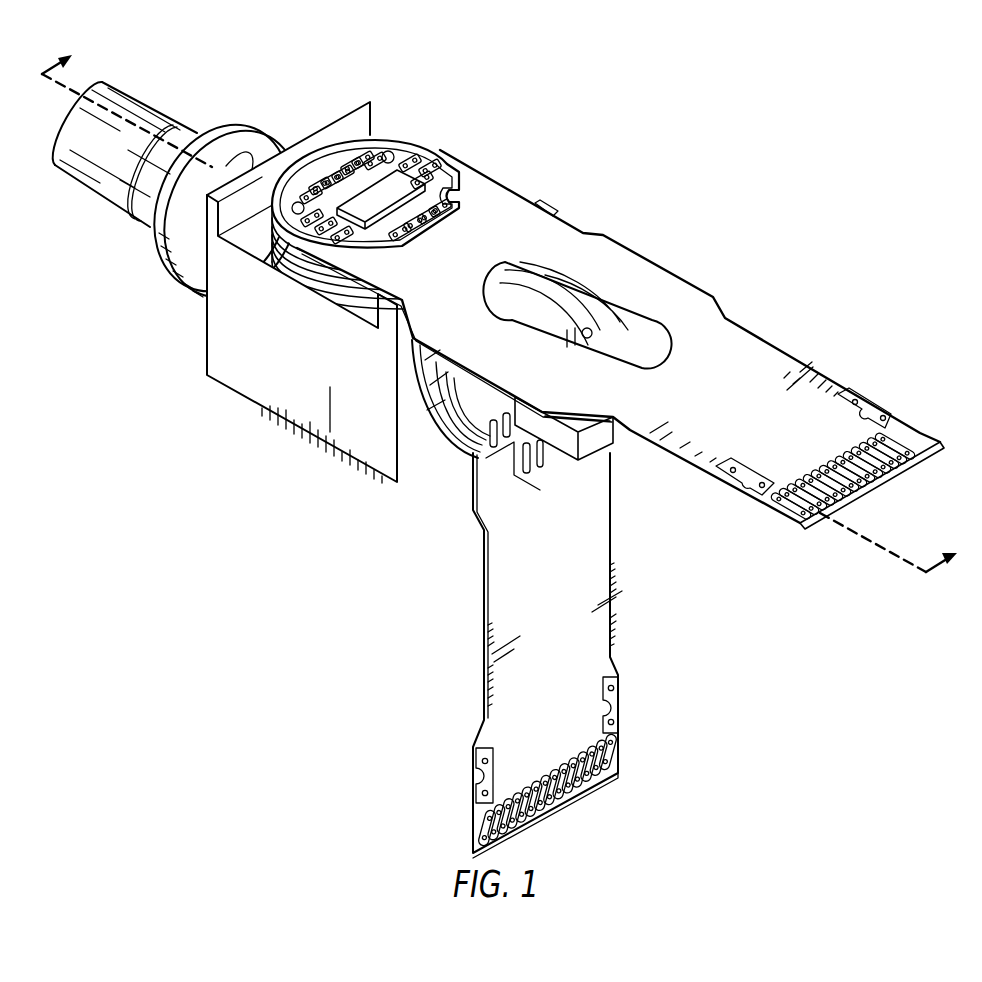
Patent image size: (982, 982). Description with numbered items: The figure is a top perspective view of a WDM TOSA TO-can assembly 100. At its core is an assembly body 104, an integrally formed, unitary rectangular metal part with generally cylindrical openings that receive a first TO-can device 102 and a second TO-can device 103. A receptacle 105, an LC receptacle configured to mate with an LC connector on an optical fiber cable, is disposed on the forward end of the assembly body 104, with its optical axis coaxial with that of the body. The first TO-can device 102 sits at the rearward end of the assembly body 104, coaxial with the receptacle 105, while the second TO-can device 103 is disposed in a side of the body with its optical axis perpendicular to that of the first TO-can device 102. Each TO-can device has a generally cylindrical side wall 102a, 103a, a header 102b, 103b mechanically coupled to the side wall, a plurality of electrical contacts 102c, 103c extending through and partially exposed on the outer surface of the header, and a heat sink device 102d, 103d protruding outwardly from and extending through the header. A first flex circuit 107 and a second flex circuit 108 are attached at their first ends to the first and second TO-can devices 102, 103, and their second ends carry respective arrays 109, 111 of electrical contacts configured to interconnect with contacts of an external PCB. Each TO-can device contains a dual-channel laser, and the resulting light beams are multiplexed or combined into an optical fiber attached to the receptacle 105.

The WDM TOSA TO-can assembly 100 is at (501, 453).
The first TO-can device 102 is at (620, 504).
The side wall 102a is at (453, 470).
The header 102b is at (550, 297).
The electrical contacts 102c is at (580, 317).
The first heat sink device 102d is at (609, 451).
The second TO-can device 103 is at (582, 462).
The side wall 103a is at (357, 295).
The header 103b is at (284, 271).
The electrical contacts 103c is at (312, 190).
The second heat sink device 103d is at (364, 232).
The assembly body 104 is at (226, 389).
The receptacle 105 is at (92, 194).
The first flex circuit 107 is at (612, 594).
The second flex circuit 108 is at (778, 349).
The array of electrical contacts 109 is at (568, 795).
The array of electrical contacts 111 is at (870, 483).